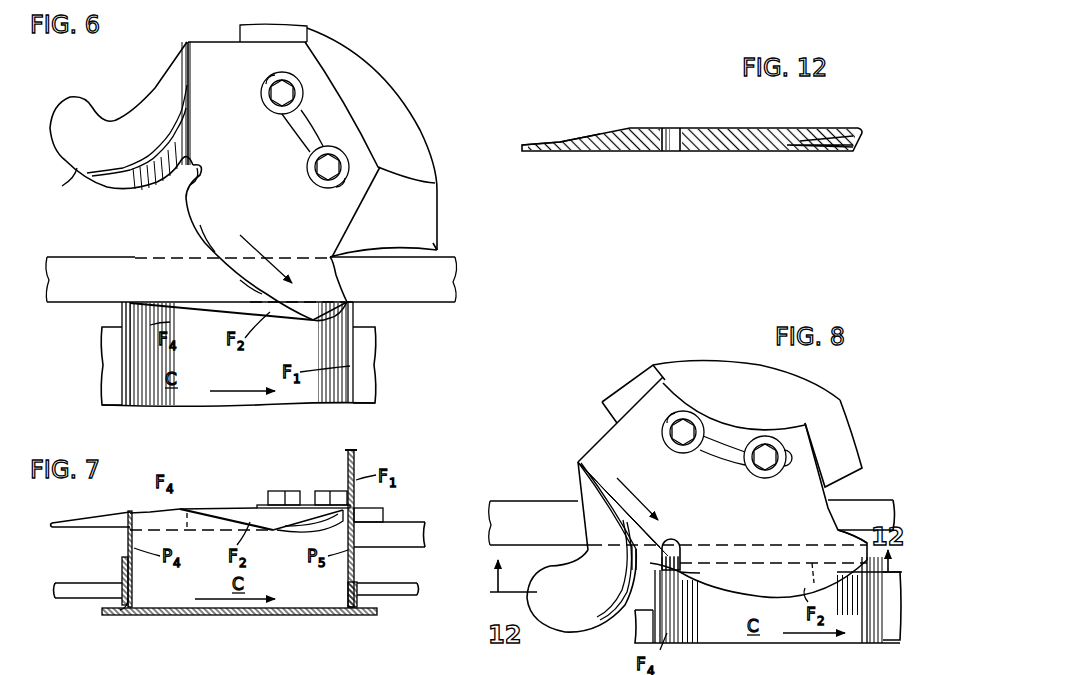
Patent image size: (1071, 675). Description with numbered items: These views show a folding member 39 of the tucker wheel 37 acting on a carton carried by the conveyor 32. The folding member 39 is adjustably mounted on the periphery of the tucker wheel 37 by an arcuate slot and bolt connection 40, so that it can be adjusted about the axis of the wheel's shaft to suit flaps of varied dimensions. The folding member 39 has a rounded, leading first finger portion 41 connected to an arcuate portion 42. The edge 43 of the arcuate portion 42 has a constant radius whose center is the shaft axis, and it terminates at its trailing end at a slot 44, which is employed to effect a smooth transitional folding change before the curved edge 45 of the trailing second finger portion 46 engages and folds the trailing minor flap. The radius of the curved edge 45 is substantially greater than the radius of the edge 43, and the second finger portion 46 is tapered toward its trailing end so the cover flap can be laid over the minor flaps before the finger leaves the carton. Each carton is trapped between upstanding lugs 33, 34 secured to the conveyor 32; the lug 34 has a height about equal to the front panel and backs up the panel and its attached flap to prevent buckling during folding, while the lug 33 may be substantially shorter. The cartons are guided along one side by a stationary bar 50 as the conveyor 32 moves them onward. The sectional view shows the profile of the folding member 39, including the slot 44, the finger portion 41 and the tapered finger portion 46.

In FIG. 6, the conveyor 32 is at (110, 347).
In FIG. 7, the conveyor 32 is at (114, 612).
In FIG. 6, the lug 33 is at (126, 382).
In FIG. 7, the lug 33 is at (125, 563).
In FIG. 8, the lug 33 is at (657, 627).
In FIG. 6, the lug 34 is at (356, 347).
In FIG. 7, the lug 34 is at (358, 594).
In FIG. 6, the tucker wheel 37 is at (432, 212).
In FIG. 7, the tucker wheel 37 is at (397, 532).
In FIG. 8, the tucker wheel 37 is at (602, 410).
In FIG. 6, the folding member 39 is at (276, 217).
In FIG. 7, the folding member 39 is at (217, 506).
In FIG. 12, the folding member 39 is at (712, 157).
In FIG. 8, the folding member 39 is at (733, 503).
In FIG. 6, the arcuate slot and bolt connection 40 is at (302, 157).
In FIG. 7, the arcuate slot and bolt connection 40 is at (266, 491).
In FIG. 8, the arcuate slot and bolt connection 40 is at (727, 444).
In FIG. 6, the leading first finger portion 41 is at (337, 292).
In FIG. 12, the leading first finger portion 41 is at (850, 152).
In FIG. 8, the leading first finger portion 41 is at (853, 555).
In FIG. 6, the arcuate portion 42 is at (248, 284).
In FIG. 8, the arcuate portion 42 is at (773, 585).
In FIG. 6, the edge 43 is at (206, 243).
In FIG. 6, the slot 44 is at (189, 183).
In FIG. 12, the slot 44 is at (670, 152).
In FIG. 8, the slot 44 is at (673, 542).
In FIG. 6, the curved edge 45 is at (77, 168).
In FIG. 8, the curved edge 45 is at (682, 572).
In FIG. 6, the trailing second finger portion 46 is at (73, 118).
In FIG. 12, the trailing second finger portion 46 is at (535, 152).
In FIG. 8, the trailing second finger portion 46 is at (547, 620).
In FIG. 6, the stationary bar 50 is at (458, 284).
In FIG. 7, the stationary bar 50 is at (68, 598).
In FIG. 8, the stationary bar 50 is at (512, 507).